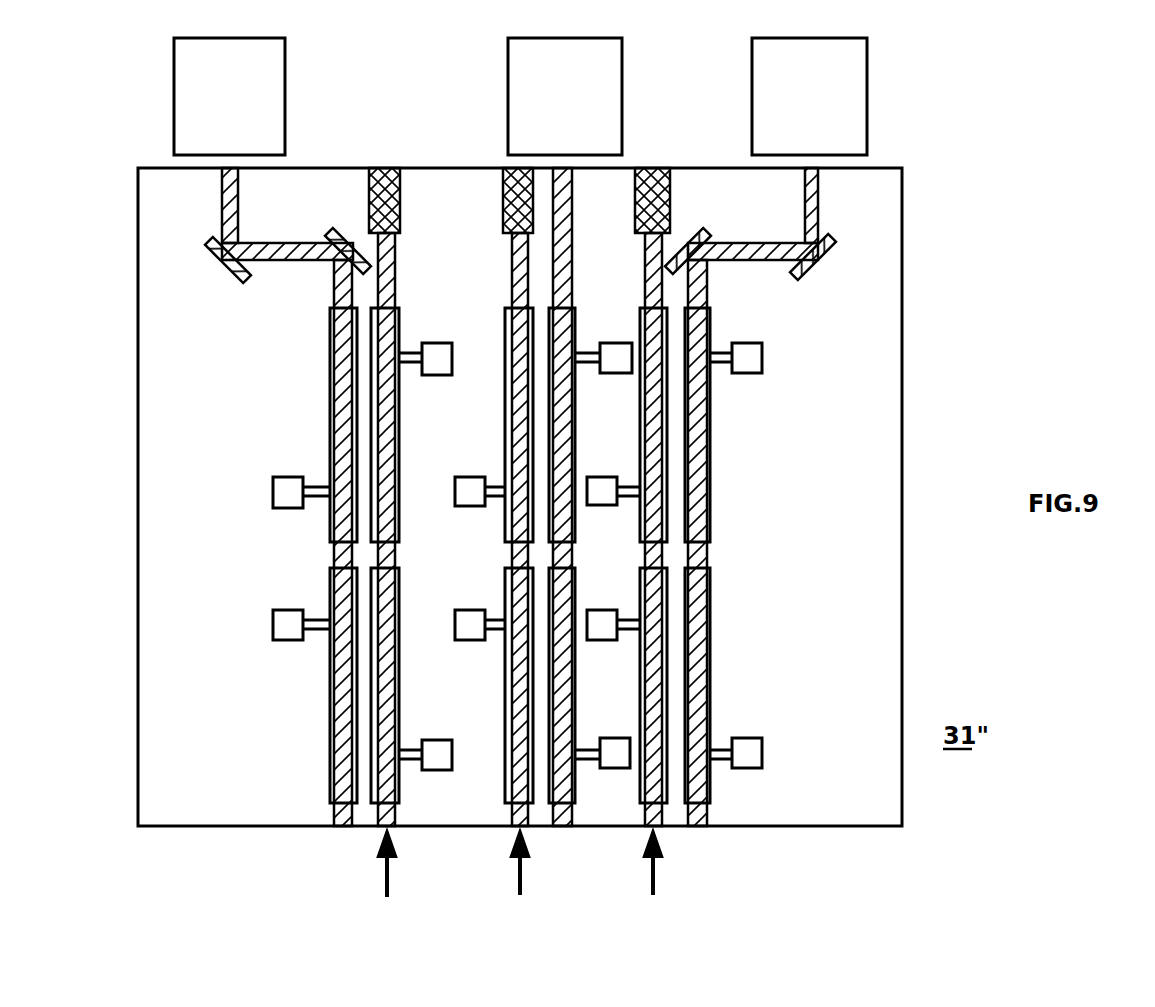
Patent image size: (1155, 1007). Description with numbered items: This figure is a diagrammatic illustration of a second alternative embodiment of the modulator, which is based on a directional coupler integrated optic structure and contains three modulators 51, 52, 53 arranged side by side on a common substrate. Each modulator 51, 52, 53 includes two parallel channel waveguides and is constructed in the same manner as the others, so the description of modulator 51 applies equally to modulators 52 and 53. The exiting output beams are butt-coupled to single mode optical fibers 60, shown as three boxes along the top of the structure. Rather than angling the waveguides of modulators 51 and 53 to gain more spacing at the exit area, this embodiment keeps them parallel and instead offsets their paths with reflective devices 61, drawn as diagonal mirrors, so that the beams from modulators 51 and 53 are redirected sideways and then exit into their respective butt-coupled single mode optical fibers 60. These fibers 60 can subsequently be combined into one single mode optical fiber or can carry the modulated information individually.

The single mode optical fibers 60 is at (186, 95).
The reflective devices 61 is at (222, 264).
The modulator 51 is at (404, 722).
The modulator 52 is at (582, 719).
The modulator 53 is at (718, 719).